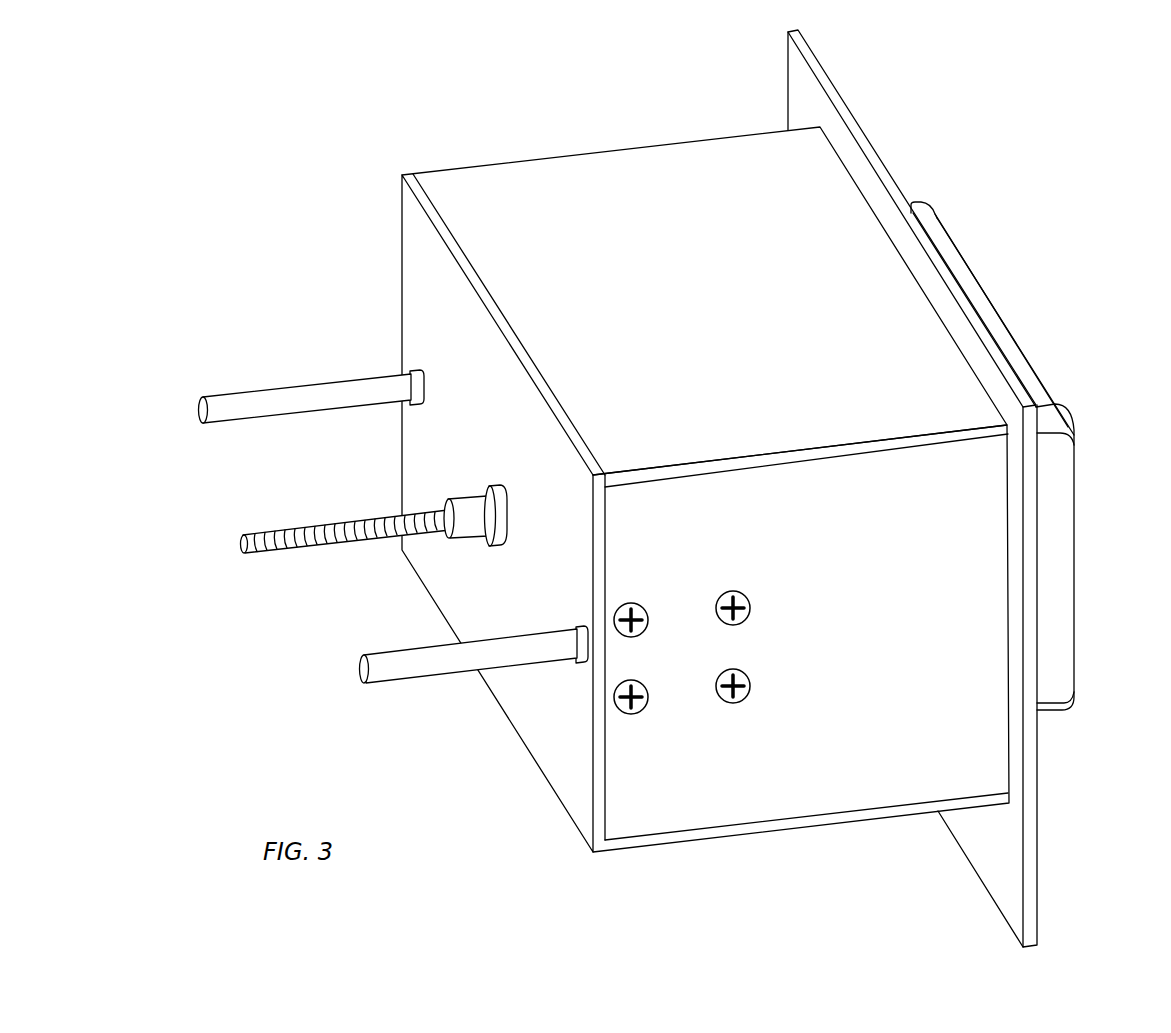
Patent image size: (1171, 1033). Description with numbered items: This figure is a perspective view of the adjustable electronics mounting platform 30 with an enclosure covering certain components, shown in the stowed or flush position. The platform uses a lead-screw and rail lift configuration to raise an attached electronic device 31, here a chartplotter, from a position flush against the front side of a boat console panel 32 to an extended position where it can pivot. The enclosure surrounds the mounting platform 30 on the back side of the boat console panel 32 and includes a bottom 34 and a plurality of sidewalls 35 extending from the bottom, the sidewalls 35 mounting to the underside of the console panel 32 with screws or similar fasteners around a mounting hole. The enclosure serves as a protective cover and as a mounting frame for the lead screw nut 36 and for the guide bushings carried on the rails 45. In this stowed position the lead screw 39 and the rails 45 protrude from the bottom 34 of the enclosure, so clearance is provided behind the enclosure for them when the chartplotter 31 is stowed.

The adjustable electronics mounting platform 30 is at (494, 108).
The electronic device 31 is at (1078, 505).
The boat console panel 32 is at (1038, 880).
The bottom 34 is at (402, 237).
The sidewalls 35 is at (652, 145).
The lead screw nut 36 is at (462, 498).
The lead screw 39 is at (268, 553).
The rails 45 is at (240, 393).